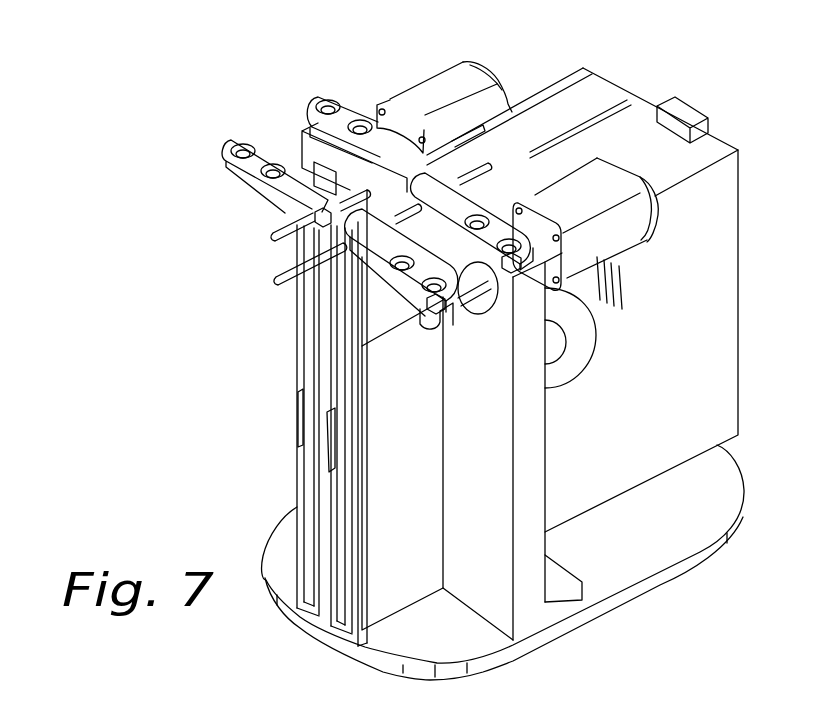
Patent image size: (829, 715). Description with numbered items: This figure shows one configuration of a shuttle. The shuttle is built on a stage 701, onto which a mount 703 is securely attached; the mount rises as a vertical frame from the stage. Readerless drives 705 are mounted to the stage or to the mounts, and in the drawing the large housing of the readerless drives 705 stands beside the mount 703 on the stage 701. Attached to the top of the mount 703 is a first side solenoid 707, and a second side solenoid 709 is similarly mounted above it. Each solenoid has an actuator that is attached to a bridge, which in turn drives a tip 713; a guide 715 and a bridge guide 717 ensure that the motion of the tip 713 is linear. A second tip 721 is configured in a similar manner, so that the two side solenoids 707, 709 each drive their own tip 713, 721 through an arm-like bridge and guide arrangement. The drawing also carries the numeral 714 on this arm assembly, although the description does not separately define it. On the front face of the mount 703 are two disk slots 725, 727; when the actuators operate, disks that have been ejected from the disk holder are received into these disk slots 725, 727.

The stage 701 is at (667, 548).
The mount 703 is at (547, 607).
The readerless drives 705 is at (742, 330).
The first side solenoid 707 is at (648, 222).
The second side solenoid 709 is at (477, 78).
The tip 713 is at (277, 280).
The arm 714 is at (373, 245).
The guide 715 is at (382, 250).
The bridge guide 717 is at (467, 208).
The tip 721 is at (272, 232).
The disk slot 725 is at (337, 500).
The disk slot 727 is at (310, 455).